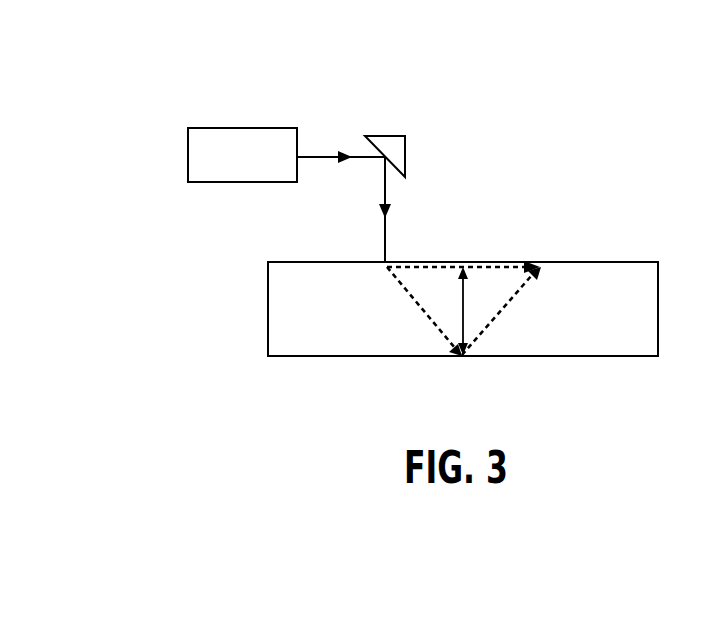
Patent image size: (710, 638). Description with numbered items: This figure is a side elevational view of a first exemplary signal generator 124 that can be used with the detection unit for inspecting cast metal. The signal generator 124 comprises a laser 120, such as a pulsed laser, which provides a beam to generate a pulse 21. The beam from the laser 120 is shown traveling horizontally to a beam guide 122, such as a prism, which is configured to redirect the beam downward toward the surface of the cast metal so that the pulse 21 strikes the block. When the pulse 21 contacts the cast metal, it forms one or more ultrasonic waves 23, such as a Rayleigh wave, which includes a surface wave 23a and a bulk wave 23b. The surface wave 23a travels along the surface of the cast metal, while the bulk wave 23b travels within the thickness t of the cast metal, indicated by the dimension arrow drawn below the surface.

The first exemplary signal generator 124 is at (265, 41).
The laser 120 is at (188, 153).
The beam guide 122 is at (398, 146).
The pulse 21 is at (385, 230).
The ultrasonic waves 23 is at (426, 256).
The surface wave 23a is at (505, 263).
The bulk wave 23b is at (432, 320).
The thickness t is at (470, 311).